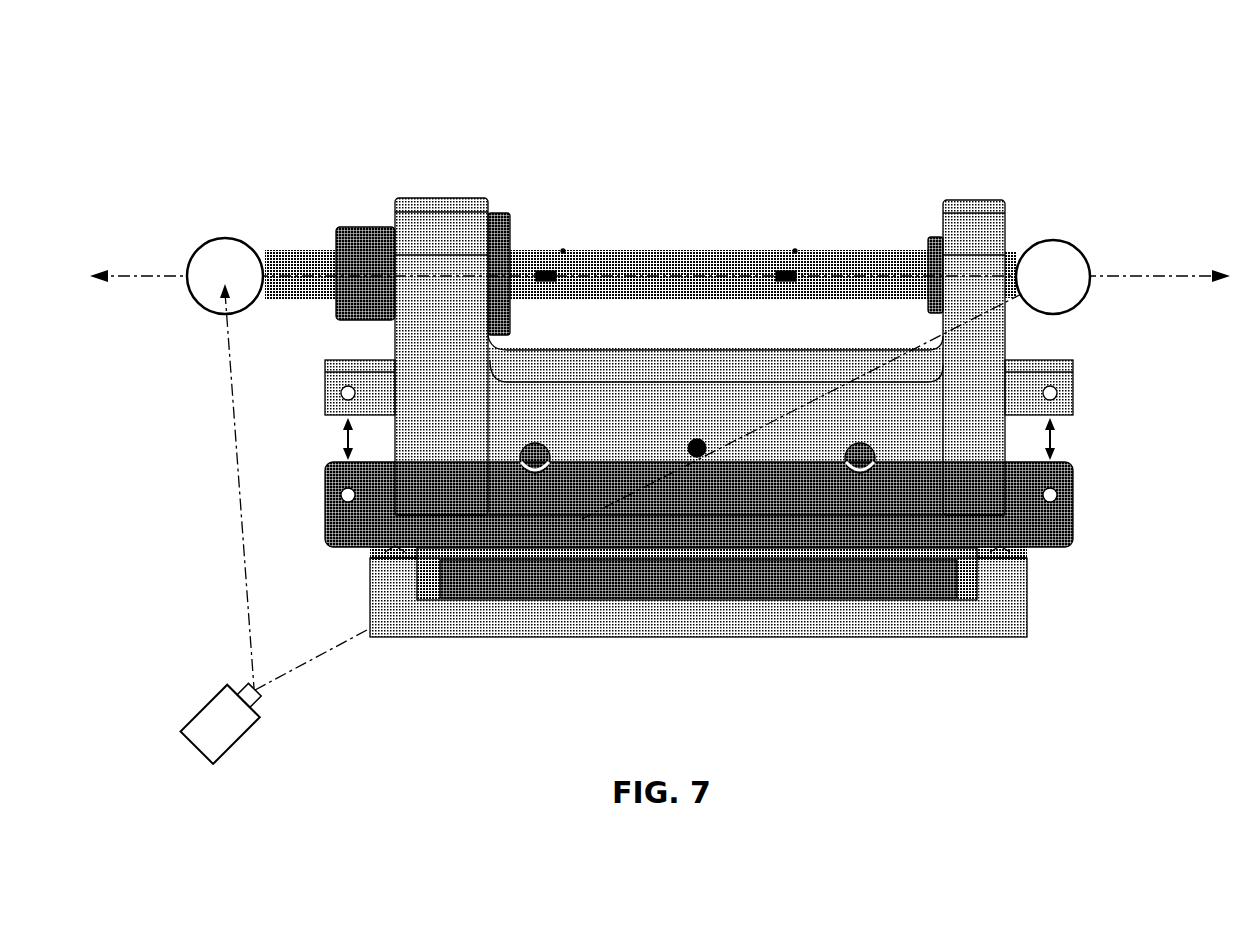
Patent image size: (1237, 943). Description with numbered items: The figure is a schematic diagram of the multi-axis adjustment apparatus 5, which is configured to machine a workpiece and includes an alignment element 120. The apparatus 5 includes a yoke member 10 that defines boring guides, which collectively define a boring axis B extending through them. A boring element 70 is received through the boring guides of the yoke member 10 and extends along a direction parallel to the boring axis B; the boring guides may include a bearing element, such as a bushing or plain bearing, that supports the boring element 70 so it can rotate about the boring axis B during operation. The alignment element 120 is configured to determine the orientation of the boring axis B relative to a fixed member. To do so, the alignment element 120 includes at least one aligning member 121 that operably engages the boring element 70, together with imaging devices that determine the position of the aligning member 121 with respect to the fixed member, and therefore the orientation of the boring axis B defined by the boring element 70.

The multi-axis adjustment apparatus 5 is at (160, 58).
The yoke member 10 is at (1032, 323).
The boring element 70 is at (665, 252).
The alignment element 120 is at (178, 665).
The aligning member 121 is at (220, 725).